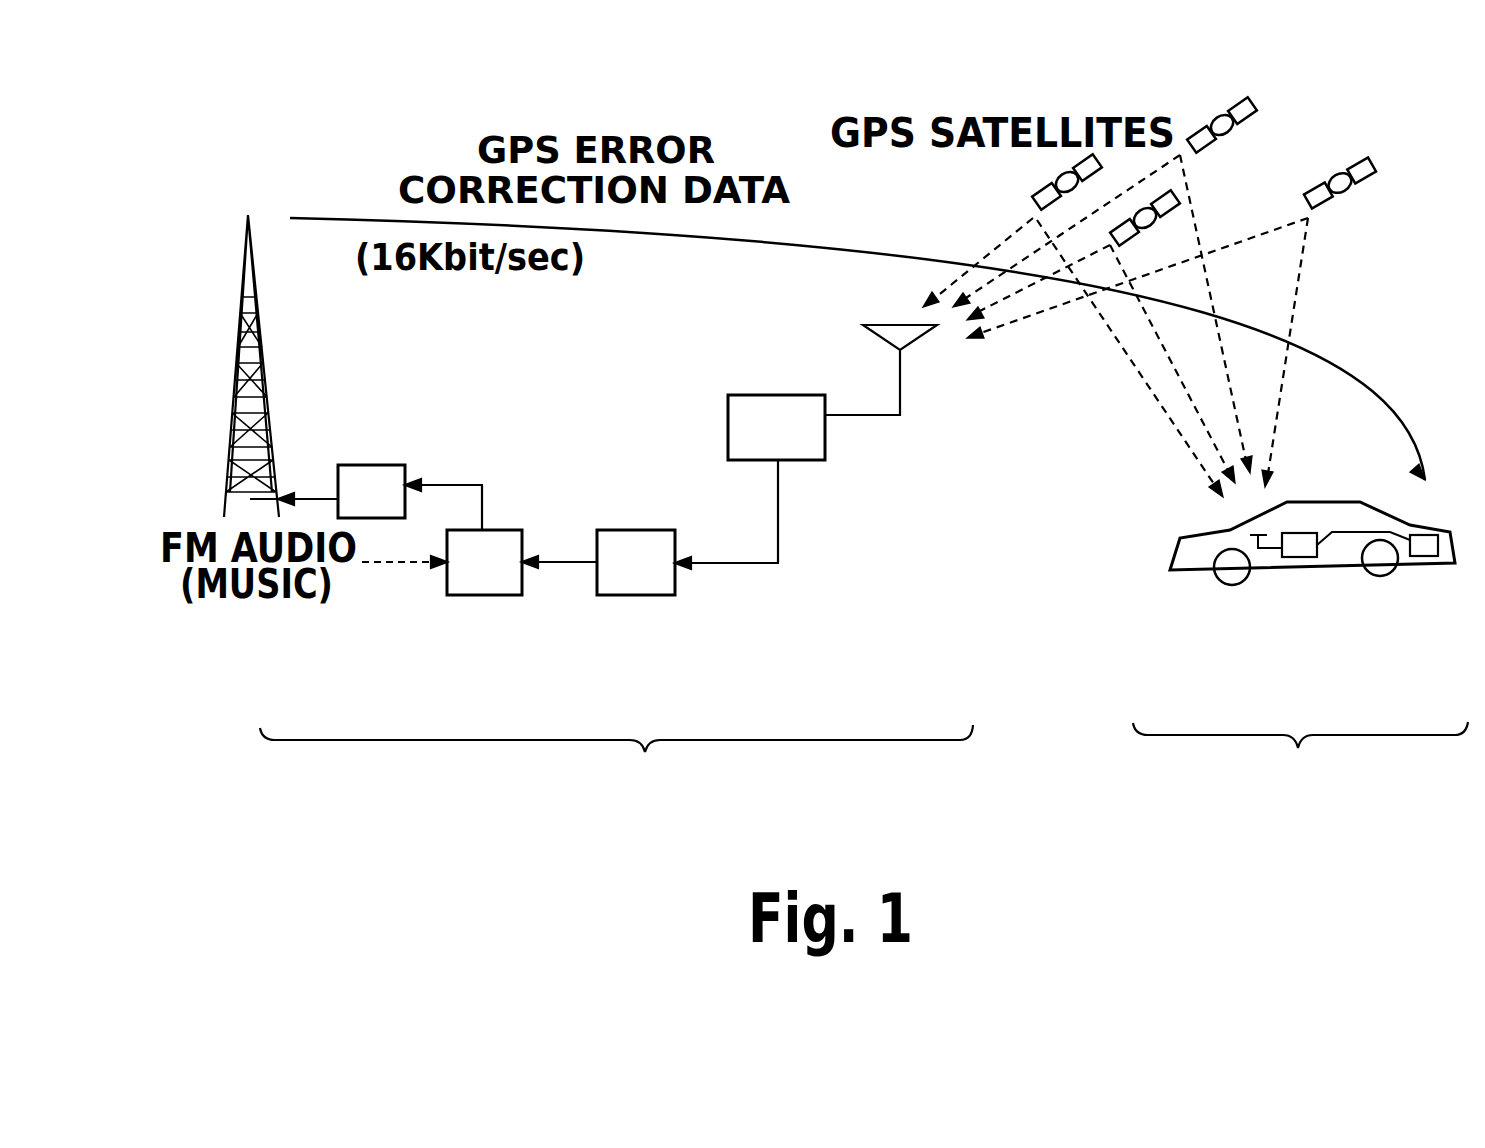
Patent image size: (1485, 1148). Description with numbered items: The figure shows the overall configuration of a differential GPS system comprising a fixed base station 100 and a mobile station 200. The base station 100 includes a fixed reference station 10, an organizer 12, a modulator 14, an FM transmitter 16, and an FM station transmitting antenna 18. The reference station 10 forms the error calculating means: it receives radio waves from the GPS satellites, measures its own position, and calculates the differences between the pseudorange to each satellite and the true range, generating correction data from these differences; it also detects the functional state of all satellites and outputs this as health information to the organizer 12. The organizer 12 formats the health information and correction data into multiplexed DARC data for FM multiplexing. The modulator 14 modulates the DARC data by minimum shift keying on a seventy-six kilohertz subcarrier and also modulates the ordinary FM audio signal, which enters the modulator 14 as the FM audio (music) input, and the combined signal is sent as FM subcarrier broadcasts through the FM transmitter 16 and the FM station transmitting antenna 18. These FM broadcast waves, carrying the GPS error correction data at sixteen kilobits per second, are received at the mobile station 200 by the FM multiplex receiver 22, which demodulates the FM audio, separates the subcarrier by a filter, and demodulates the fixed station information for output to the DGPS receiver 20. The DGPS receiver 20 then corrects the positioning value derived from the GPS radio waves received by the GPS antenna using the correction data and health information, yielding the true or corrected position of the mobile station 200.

The fixed reference station 10 is at (767, 393).
The organizer 12 is at (640, 527).
The modulator 14 is at (508, 527).
The FM transmitter 16 is at (373, 463).
The FM station transmitting antenna 18 is at (228, 445).
The DGPS receiver 20 is at (1298, 558).
The FM multiplex receiver 22 is at (1425, 560).
The fixed base station 100 is at (687, 797).
The mobile station 200 is at (1340, 793).